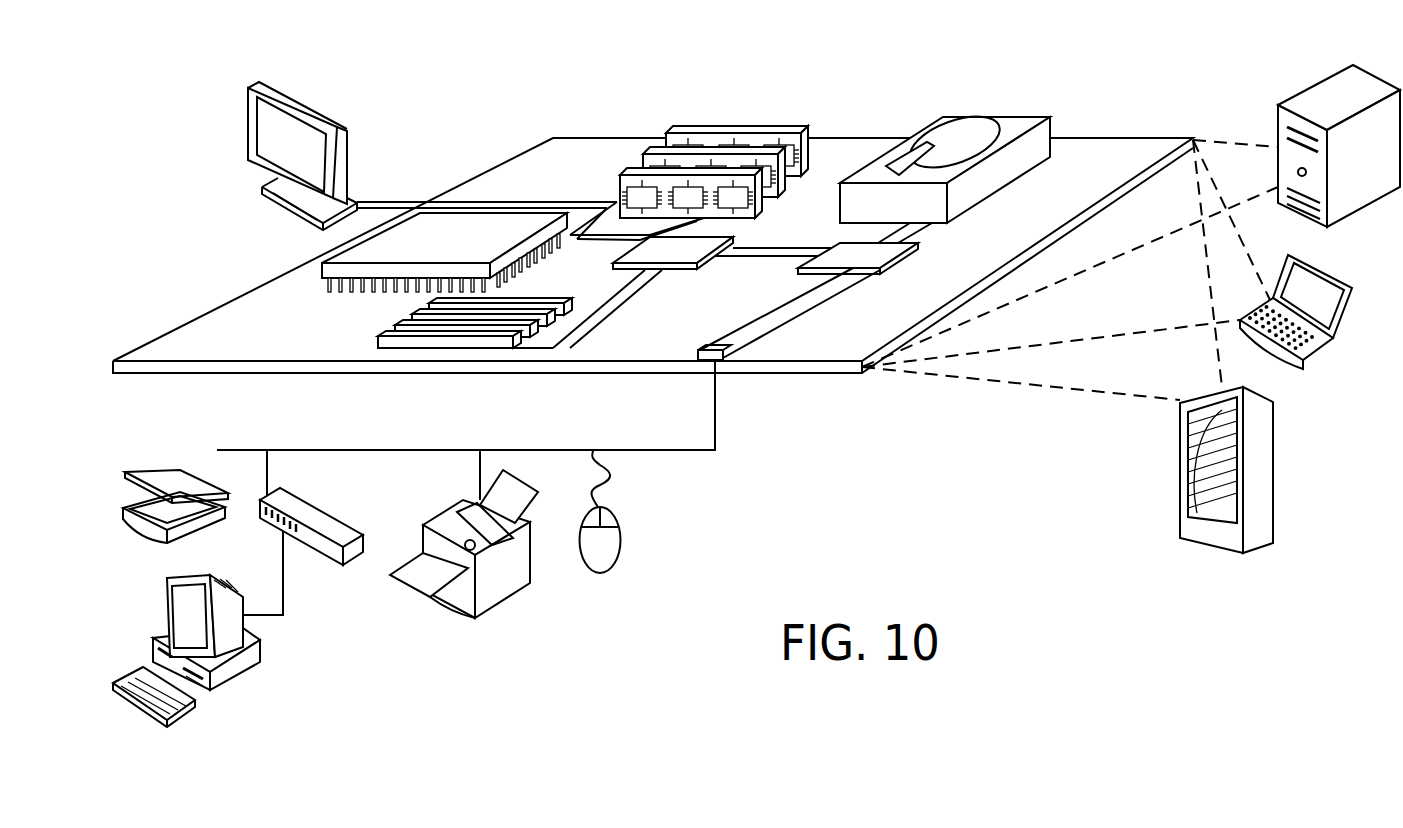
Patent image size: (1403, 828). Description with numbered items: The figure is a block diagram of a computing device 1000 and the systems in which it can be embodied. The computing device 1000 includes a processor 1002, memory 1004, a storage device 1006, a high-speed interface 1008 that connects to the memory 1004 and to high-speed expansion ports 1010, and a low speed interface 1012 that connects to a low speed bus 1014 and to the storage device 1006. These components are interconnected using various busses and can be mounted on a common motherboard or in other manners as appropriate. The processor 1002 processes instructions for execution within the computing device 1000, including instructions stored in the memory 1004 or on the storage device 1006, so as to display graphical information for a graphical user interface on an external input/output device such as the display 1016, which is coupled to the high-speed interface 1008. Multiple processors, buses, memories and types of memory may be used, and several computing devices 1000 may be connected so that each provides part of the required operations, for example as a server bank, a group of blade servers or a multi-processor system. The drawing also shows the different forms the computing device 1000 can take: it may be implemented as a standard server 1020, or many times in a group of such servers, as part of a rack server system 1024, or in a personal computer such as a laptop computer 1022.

The computing device 1000 is at (450, 105).
The processor 1002 is at (337, 268).
The memory 1004 is at (724, 132).
The storage device 1006 is at (956, 115).
The high-speed interface 1008 is at (658, 254).
The high-speed expansion ports 1010 is at (400, 327).
The low speed interface 1012 is at (843, 262).
The low speed bus 1014 is at (727, 355).
The display 1016 is at (259, 83).
The standard server 1020 is at (1278, 127).
The laptop computer 1022 is at (1292, 358).
The rack server system 1024 is at (1184, 453).